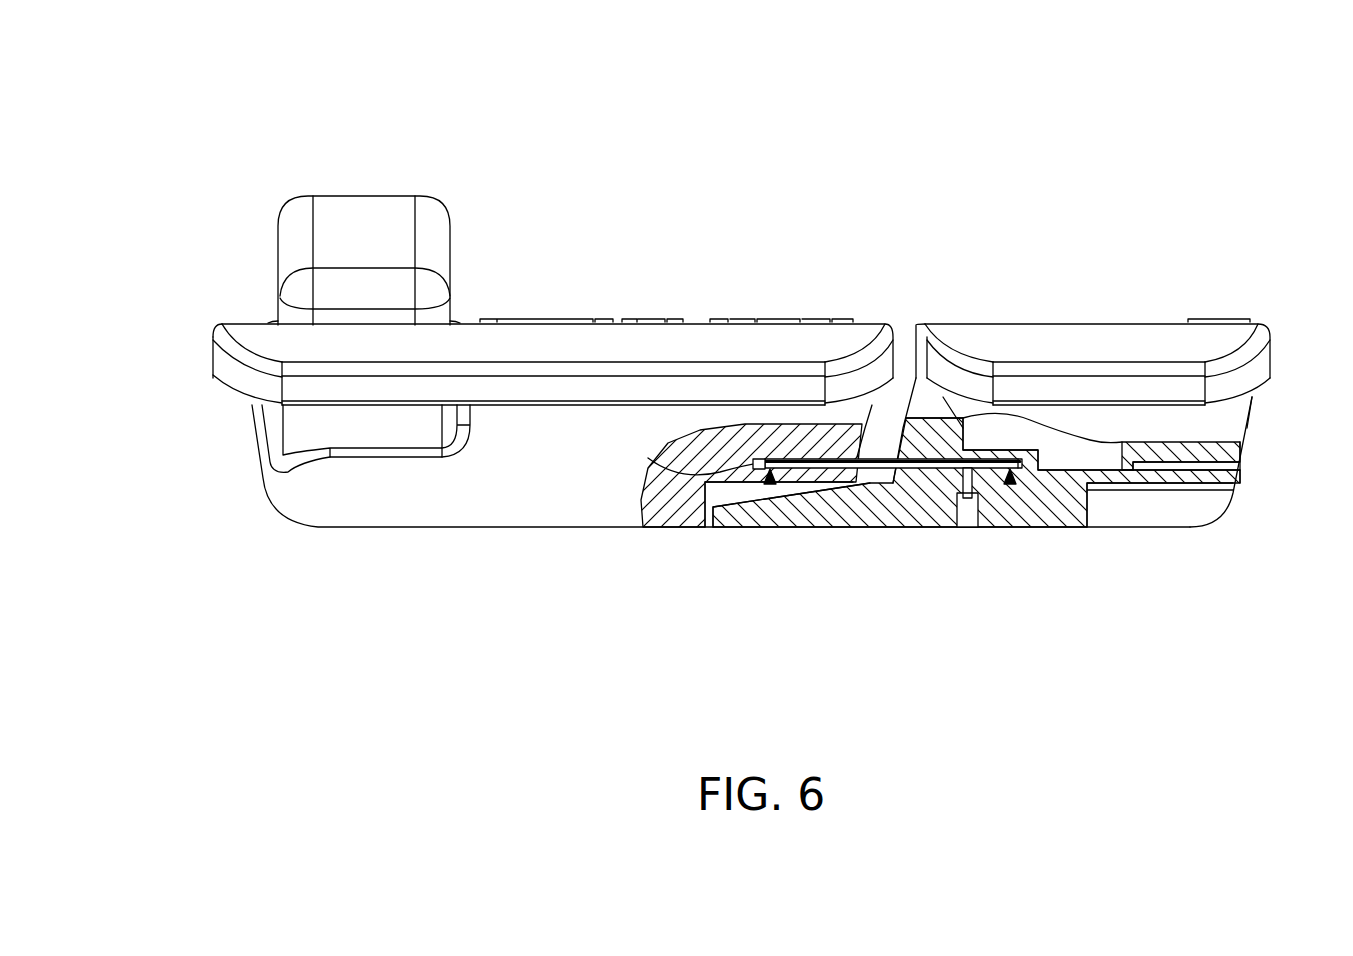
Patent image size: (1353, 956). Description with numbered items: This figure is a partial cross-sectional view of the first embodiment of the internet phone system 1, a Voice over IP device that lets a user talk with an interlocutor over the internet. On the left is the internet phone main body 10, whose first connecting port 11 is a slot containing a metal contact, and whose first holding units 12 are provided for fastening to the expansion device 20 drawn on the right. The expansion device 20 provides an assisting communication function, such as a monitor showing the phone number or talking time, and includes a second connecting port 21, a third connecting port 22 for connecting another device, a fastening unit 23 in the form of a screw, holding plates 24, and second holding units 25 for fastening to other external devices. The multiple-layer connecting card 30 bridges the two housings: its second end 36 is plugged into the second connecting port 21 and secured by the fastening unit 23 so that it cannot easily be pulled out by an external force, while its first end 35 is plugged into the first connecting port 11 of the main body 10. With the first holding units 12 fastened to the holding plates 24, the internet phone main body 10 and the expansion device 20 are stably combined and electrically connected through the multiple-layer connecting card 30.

The internet phone system 1 is at (265, 97).
The internet phone main body 10 is at (282, 541).
The first connecting port 11 is at (690, 478).
The first holding unit 12 is at (708, 528).
The expansion device 20 is at (1084, 312).
The second connecting port 21 is at (1042, 473).
The third connecting port 22 is at (1220, 466).
The fastening unit 23 is at (966, 528).
The holding plate 24 is at (806, 527).
The second holding unit 25 is at (1170, 495).
The multiple-layer connecting card 30 is at (880, 495).
The first end 35 is at (768, 480).
The second end 36 is at (1010, 480).